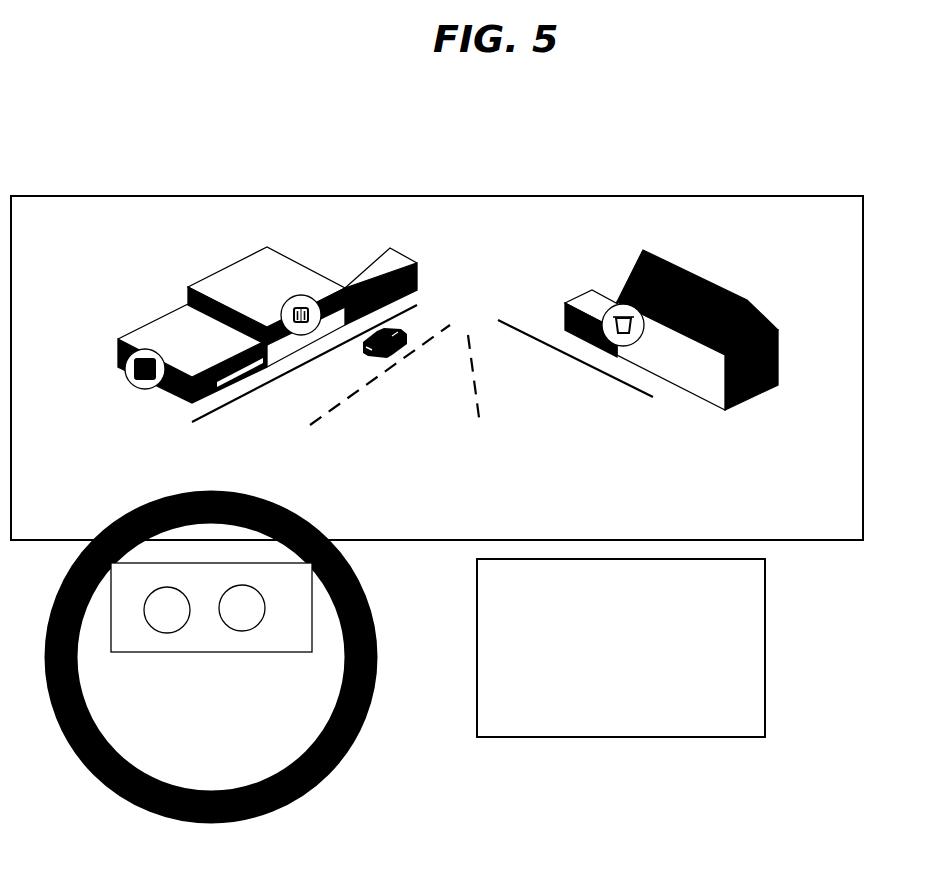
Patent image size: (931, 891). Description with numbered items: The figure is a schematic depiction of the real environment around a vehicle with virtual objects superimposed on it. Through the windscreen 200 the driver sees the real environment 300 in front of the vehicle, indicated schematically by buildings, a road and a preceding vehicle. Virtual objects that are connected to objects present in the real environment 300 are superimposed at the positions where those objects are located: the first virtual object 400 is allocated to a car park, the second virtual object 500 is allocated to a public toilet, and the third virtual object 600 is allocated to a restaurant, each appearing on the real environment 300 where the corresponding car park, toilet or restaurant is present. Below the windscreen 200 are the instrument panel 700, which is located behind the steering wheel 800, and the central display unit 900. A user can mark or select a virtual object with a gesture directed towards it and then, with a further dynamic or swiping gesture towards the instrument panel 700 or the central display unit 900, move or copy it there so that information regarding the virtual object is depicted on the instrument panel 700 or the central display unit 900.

The windscreen 200 is at (437, 195).
The real environment 300 is at (530, 250).
The first virtual object 400 is at (144, 350).
The second virtual object 500 is at (302, 295).
The third virtual object 600 is at (623, 346).
The instrument panel 700 is at (258, 652).
The steering wheel 800 is at (257, 813).
The central display unit 900 is at (623, 737).